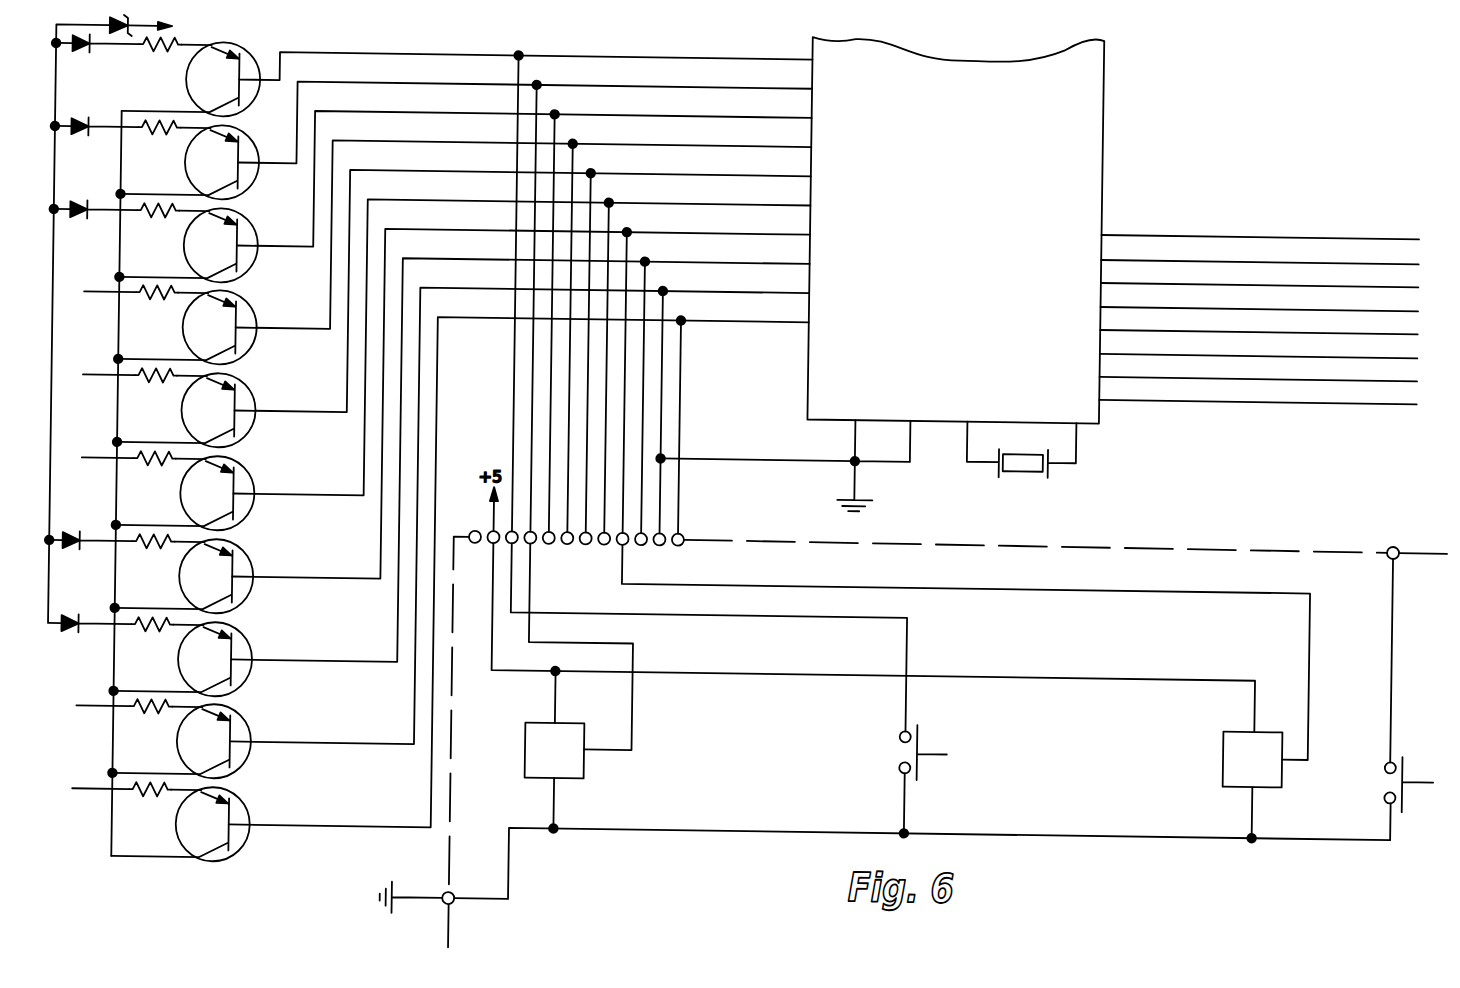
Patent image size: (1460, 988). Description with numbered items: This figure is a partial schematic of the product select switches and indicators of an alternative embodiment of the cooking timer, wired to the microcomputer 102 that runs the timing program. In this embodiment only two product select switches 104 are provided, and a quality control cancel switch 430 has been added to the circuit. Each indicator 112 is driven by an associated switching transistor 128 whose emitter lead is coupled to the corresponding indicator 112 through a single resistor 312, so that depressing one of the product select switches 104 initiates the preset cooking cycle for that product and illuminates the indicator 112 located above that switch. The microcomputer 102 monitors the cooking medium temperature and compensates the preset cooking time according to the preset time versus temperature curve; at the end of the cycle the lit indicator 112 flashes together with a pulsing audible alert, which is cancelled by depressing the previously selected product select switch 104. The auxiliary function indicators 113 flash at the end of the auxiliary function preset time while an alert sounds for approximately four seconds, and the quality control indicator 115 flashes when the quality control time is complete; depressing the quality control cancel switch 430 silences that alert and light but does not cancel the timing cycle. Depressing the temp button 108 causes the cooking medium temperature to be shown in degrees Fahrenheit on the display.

The microcomputer 102 is at (982, 200).
The product select switch 104 is at (567, 758).
The temp button 108 is at (1407, 751).
The indicator 112 is at (84, 144).
The auxiliary function indicator 113 is at (70, 227).
The quality control indicator 115 is at (81, 61).
The switching transistor 128 is at (241, 149).
The resistor 312 is at (165, 133).
The quality control cancel switch 430 is at (902, 752).